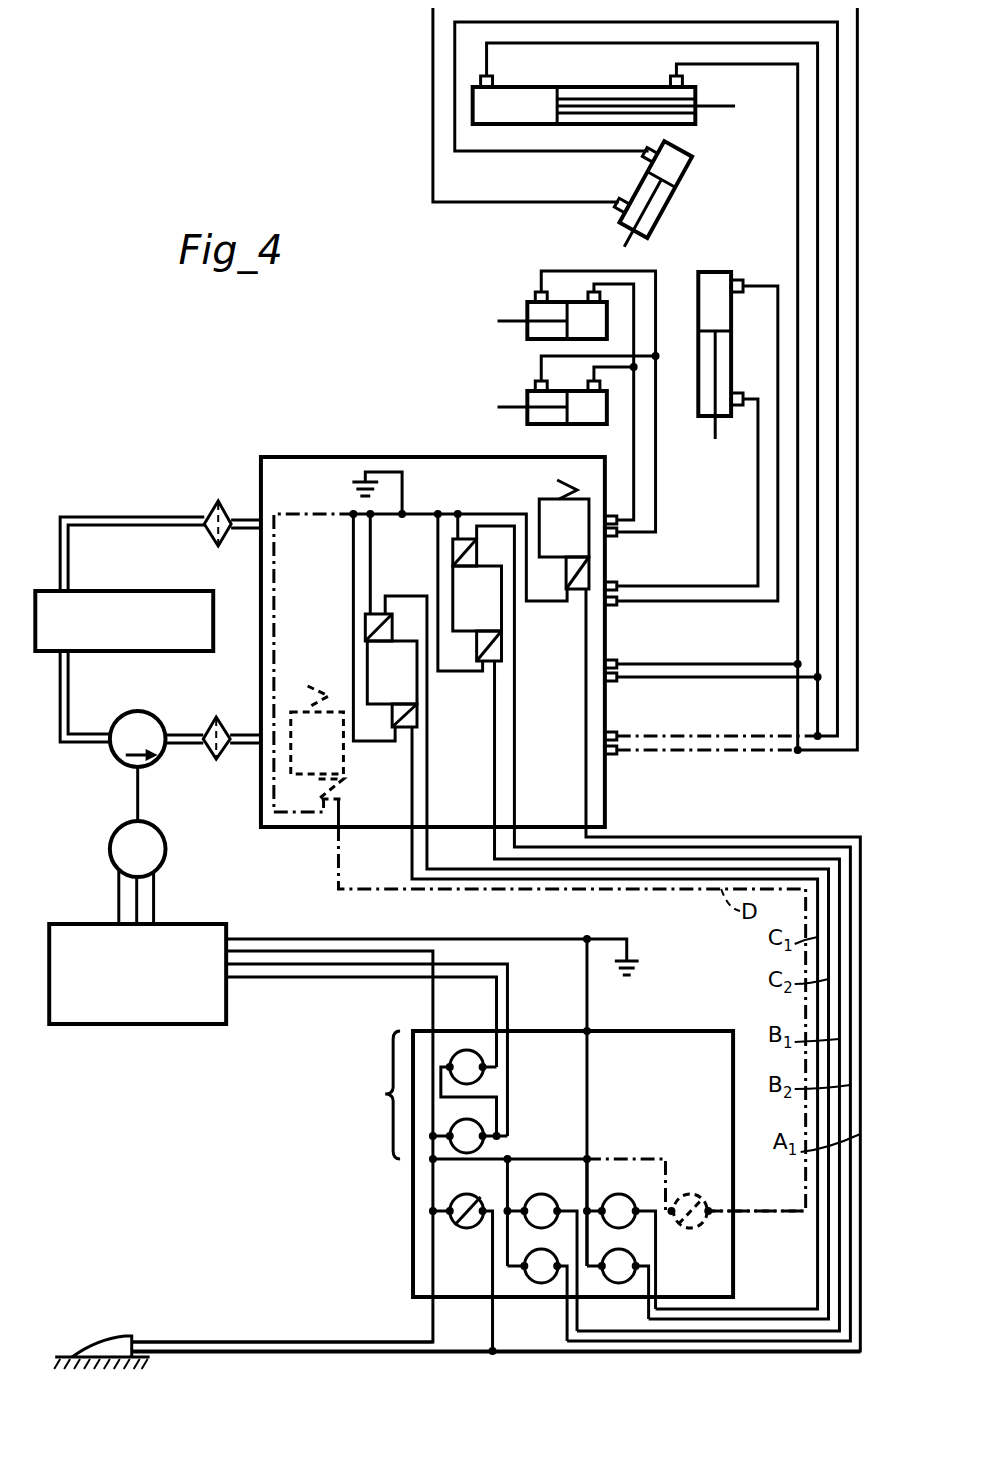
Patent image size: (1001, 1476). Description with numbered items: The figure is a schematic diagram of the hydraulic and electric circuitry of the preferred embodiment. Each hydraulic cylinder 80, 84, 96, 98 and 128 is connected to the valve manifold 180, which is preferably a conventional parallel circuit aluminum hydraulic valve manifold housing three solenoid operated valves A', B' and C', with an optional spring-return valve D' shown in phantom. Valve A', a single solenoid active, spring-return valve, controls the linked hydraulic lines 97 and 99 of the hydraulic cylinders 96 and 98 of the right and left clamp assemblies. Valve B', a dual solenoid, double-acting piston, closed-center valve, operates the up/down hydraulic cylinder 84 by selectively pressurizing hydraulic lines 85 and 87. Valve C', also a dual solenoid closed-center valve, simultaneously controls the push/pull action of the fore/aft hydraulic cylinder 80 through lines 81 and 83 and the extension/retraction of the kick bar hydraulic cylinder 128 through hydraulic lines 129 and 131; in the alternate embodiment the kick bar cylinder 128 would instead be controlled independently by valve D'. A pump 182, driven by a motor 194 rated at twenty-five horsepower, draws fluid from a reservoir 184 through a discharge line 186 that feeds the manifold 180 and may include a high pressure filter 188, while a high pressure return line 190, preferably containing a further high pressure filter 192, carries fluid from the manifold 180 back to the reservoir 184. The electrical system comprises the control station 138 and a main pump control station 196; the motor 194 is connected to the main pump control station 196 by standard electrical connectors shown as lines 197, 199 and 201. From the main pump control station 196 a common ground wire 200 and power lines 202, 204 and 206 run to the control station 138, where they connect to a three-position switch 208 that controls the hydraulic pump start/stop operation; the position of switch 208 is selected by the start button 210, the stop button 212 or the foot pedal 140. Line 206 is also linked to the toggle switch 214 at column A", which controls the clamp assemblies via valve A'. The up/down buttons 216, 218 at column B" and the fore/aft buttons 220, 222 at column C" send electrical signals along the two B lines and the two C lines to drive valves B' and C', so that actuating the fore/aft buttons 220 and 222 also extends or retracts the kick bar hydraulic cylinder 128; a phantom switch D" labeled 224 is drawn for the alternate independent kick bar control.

The fore/aft hydraulic cylinder 80 is at (555, 88).
The hydraulic line 81 is at (491, 80).
The hydraulic line 83 is at (675, 80).
The up/down hydraulic cylinder 84 is at (700, 288).
The hydraulic line 85 is at (745, 283).
The hydraulic line 87 is at (745, 397).
The hydraulic cylinder 96 is at (528, 422).
The hydraulic line 97 is at (590, 297).
The hydraulic cylinder 98 is at (528, 332).
The hydraulic line 99 is at (536, 297).
The kick bar hydraulic cylinder 128 is at (684, 185).
The hydraulic line 129 is at (636, 157).
The hydraulic line 131 is at (612, 212).
The control station 138 is at (668, 1032).
The foot pedal 140 is at (78, 1345).
The valve manifold 180 is at (305, 458).
The pump 182 is at (155, 714).
The reservoir 184 is at (130, 592).
The discharge line 186 is at (85, 735).
The high pressure filter 188 is at (215, 718).
The high pressure return line 190 is at (95, 518).
The high pressure filter 192 is at (210, 505).
The motor 194 is at (164, 846).
The main pump control station 196 is at (225, 925).
The electrical connector line 197 is at (117, 895).
The electrical connector line 199 is at (117, 912).
The common ground wire 200 is at (580, 938).
The electrical connector line 201 is at (152, 910).
The power line 202 is at (508, 973).
The power line 204 is at (497, 1005).
The power line 206 is at (433, 1010).
The three-position switch 208 is at (315, 1095).
The start button 210 is at (460, 1052).
The stop button 212 is at (508, 1128).
The toggle switch 214 is at (454, 1228).
The up/down button 216 is at (529, 1225).
The up/down button 218 is at (530, 1285).
The fore/aft button 220 is at (608, 1225).
The fore/aft button 222 is at (611, 1285).
The switch D'' 224 is at (681, 1226).